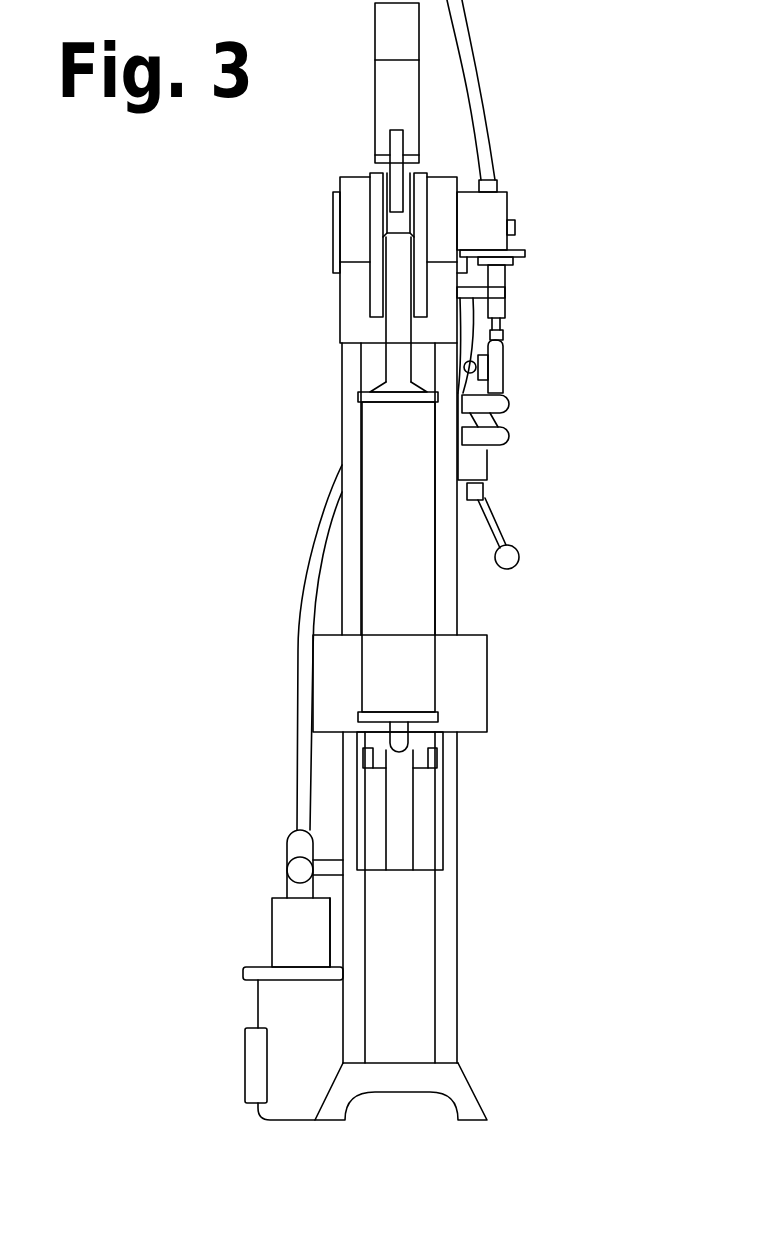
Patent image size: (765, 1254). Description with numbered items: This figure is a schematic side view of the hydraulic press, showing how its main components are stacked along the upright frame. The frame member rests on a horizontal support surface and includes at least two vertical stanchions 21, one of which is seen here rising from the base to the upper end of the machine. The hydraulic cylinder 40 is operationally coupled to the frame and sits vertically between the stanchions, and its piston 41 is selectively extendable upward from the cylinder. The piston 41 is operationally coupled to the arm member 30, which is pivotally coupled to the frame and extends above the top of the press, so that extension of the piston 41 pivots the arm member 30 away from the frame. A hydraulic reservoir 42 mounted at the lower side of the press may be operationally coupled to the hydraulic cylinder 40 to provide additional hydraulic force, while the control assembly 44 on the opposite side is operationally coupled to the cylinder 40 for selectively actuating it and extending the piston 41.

The arm member 30 is at (398, 27).
The piston 41 is at (393, 323).
The vertical stanchions 21 is at (447, 960).
The hydraulic cylinder 40 is at (407, 545).
The control assembly 44 is at (493, 363).
The hydraulic reservoir 42 is at (298, 1015).